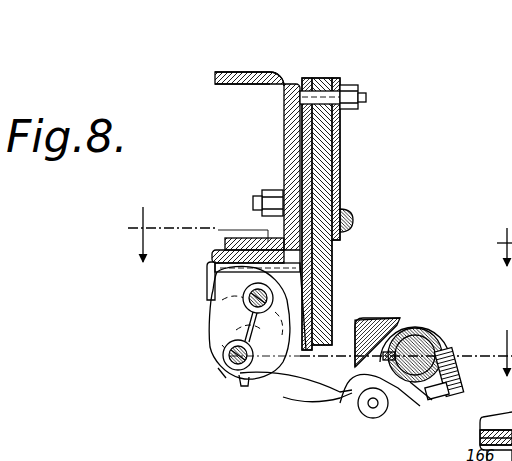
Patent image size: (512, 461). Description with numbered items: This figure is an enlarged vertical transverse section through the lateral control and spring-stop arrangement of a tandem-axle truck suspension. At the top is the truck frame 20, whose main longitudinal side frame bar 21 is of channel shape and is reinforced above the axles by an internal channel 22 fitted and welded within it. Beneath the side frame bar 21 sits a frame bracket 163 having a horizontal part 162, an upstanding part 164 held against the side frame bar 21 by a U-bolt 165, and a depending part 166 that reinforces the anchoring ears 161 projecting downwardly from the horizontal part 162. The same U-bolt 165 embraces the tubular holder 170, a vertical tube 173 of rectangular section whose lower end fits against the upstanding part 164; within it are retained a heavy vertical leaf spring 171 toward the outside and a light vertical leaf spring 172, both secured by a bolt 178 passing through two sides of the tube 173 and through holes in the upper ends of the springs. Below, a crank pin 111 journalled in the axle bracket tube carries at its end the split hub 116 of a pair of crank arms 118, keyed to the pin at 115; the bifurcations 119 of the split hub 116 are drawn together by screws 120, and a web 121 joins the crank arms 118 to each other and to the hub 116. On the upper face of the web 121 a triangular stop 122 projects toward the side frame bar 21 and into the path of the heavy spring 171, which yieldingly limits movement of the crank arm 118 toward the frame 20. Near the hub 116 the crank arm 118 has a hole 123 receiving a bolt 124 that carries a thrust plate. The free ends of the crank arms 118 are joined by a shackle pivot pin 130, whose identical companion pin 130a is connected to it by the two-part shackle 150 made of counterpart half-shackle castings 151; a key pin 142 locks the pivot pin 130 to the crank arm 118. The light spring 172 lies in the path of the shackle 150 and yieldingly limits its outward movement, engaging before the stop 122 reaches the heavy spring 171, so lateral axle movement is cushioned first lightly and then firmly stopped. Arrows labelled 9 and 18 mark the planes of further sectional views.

The section line 9 is at (188, 234).
The section line 18 is at (406, 297).
The frame 20 is at (231, 71).
The main longitudinal side frame bar 21 is at (284, 71).
The internal channel 22 is at (253, 84).
The tubular holder 170 is at (342, 135).
The anchoring ears 161 is at (312, 268).
The vertical tube 173 is at (333, 158).
The heavy vertical leaf spring 171 is at (328, 296).
The light vertical leaf spring 172 is at (310, 318).
The bolt 178 is at (361, 97).
The upstanding part 164 is at (303, 192).
The U-bolt 165 is at (352, 218).
The horizontal part 162 is at (239, 250).
The frame bracket 163 is at (210, 259).
The depending part 166 is at (207, 286).
The shackle 150 is at (210, 342).
The shackle pivot pin 130a is at (238, 304).
The shackle pivot pin 130 is at (222, 363).
The half shackle 151 is at (222, 376).
The key pin 142 is at (244, 381).
The crank arm 118 is at (308, 404).
The web 121 is at (347, 382).
The hole 123 is at (378, 408).
The bolt 124 is at (373, 405).
The triangular stop 122 is at (368, 323).
The key 115 is at (402, 326).
The split hub 116 is at (423, 331).
The crank pin 111 is at (430, 344).
The bifurcations 119 is at (451, 381).
The screws 120 is at (437, 401).